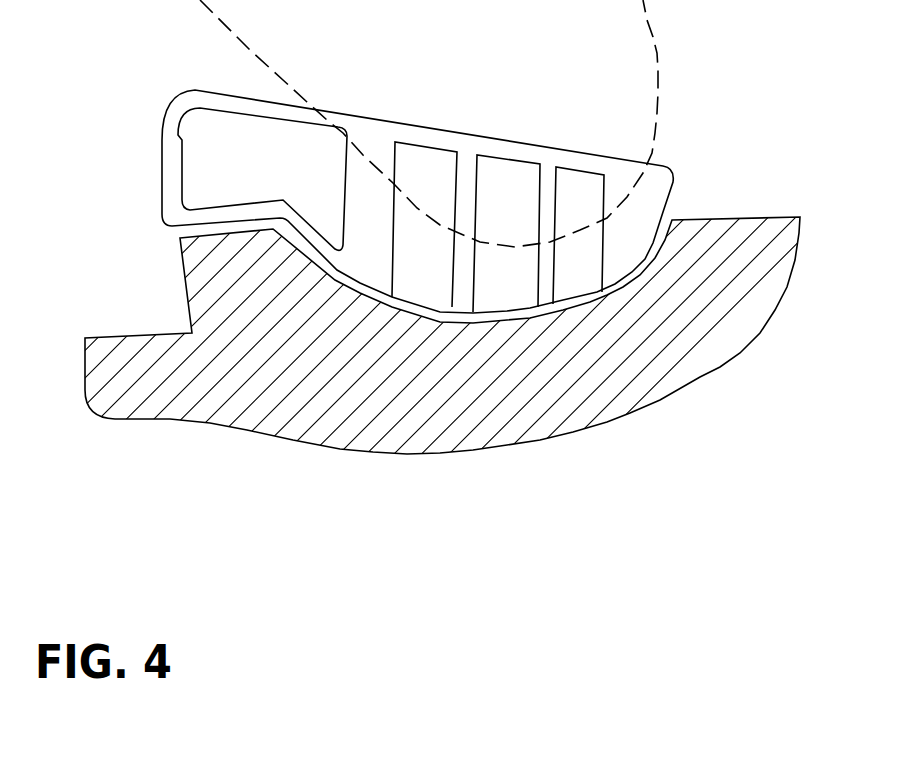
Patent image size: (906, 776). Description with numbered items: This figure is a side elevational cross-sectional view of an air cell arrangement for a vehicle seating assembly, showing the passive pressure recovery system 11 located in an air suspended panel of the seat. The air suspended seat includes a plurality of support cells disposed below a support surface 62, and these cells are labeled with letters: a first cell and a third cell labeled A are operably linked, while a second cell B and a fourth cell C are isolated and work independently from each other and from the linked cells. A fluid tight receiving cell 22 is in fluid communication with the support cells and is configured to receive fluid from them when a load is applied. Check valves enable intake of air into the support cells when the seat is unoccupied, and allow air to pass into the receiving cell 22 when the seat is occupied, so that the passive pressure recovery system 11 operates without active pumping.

The passive pressure recovery system 11 is at (140, 179).
The fluid tight receiving cell 22 is at (195, 141).
The support surface 62 is at (532, 145).